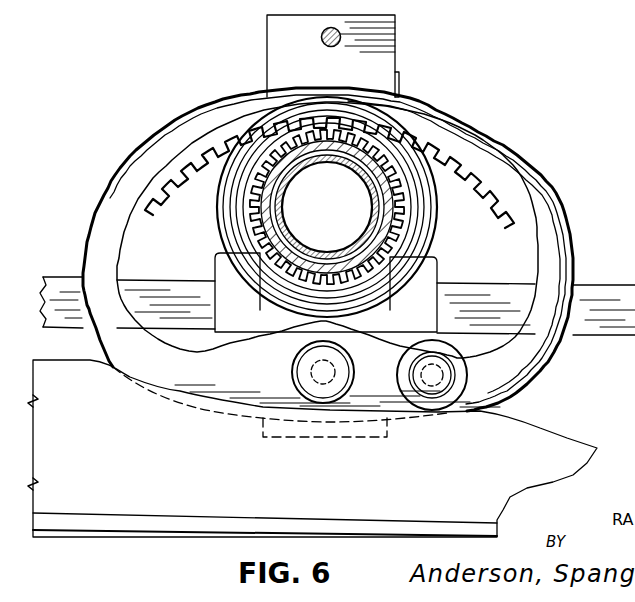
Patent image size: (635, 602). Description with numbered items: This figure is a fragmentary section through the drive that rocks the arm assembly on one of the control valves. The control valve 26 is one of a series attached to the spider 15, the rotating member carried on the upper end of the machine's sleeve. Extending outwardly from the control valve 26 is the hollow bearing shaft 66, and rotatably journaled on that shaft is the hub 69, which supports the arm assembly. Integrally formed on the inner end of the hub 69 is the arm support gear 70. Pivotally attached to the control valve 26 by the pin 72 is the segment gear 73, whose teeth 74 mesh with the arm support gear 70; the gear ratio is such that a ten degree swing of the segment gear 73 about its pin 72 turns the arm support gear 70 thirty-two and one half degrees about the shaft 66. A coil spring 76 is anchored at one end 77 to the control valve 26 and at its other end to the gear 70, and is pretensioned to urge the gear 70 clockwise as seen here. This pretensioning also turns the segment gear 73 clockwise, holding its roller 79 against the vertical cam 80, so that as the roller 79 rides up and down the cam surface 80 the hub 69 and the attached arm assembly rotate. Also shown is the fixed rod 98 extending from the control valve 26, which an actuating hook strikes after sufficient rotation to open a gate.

The spider 15 is at (598, 300).
The control valve 26 is at (280, 61).
The hollow bearing shaft 66 is at (288, 185).
The hub 69 is at (387, 204).
The arm support gear 70 is at (400, 206).
The pin 72 is at (310, 366).
The segment gear 73 is at (508, 177).
The teeth 74 is at (450, 153).
The coil spring 76 is at (228, 206).
The spring end 77 is at (400, 88).
The roller 79 is at (437, 405).
The vertical cam 80 is at (145, 463).
The fixed rod 98 is at (333, 28).